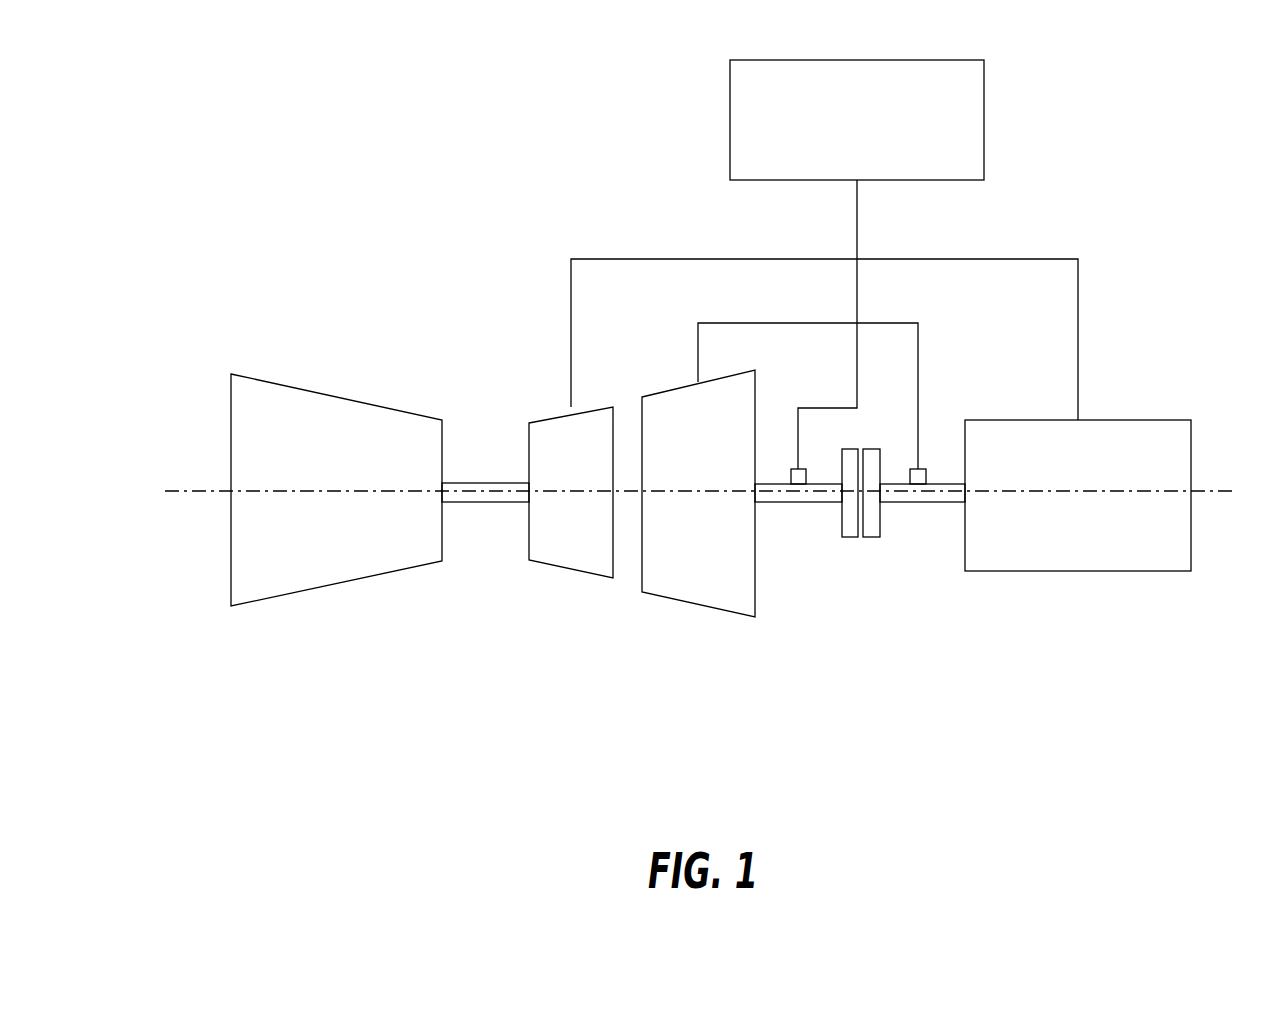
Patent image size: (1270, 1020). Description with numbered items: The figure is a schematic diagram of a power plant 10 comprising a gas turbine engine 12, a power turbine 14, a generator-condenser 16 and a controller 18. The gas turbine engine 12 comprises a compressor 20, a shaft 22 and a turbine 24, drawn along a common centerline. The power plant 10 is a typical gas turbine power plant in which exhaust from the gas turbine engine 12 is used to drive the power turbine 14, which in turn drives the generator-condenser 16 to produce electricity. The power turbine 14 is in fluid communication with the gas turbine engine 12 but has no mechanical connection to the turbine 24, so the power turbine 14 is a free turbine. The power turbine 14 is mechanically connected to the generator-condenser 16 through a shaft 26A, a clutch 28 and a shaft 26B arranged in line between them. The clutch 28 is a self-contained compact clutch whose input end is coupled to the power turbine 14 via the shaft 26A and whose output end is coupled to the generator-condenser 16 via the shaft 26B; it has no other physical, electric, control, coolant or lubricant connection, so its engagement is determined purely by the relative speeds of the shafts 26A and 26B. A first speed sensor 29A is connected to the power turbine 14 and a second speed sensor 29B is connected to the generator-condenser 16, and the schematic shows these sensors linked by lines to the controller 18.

The power plant 10 is at (1158, 215).
The gas turbine engine 12 is at (340, 305).
The power turbine 14 is at (697, 603).
The generator-condenser 16 is at (1077, 571).
The controller 18 is at (730, 120).
The compressor 20 is at (310, 592).
The shaft 22 is at (473, 483).
The turbine 24 is at (552, 565).
The shaft 26A is at (795, 502).
The shaft 26B is at (920, 502).
The clutch 28 is at (870, 551).
The first speed sensor 29A is at (790, 469).
The second speed sensor 29B is at (927, 469).